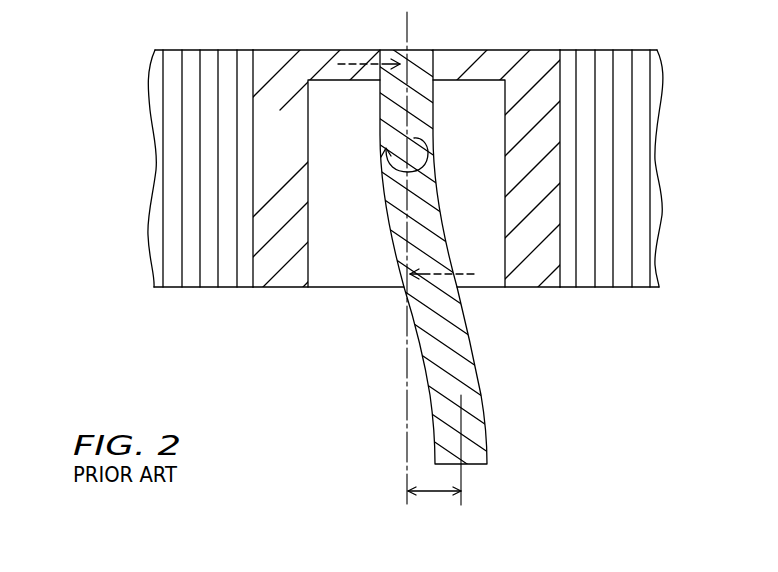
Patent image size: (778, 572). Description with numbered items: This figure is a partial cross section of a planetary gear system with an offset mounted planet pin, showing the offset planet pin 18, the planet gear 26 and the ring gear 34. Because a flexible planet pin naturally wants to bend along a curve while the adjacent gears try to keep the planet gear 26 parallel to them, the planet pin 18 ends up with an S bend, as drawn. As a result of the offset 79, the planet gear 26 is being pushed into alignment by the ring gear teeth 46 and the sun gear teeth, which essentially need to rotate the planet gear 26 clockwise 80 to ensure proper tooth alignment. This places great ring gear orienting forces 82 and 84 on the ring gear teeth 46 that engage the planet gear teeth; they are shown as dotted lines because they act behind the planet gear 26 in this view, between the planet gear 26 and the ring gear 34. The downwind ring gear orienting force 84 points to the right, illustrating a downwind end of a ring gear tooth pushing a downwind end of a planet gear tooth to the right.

The offset planet pin 18 is at (391, 248).
The planet gear 26 is at (496, 59).
The ring gear 34 is at (605, 49).
The ring gear teeth 46 is at (218, 76).
The offset 79 is at (433, 490).
The clockwise rotation 80 is at (425, 161).
The ring gear orienting force 82 is at (472, 278).
The downwind ring gear orienting force 84 is at (361, 64).